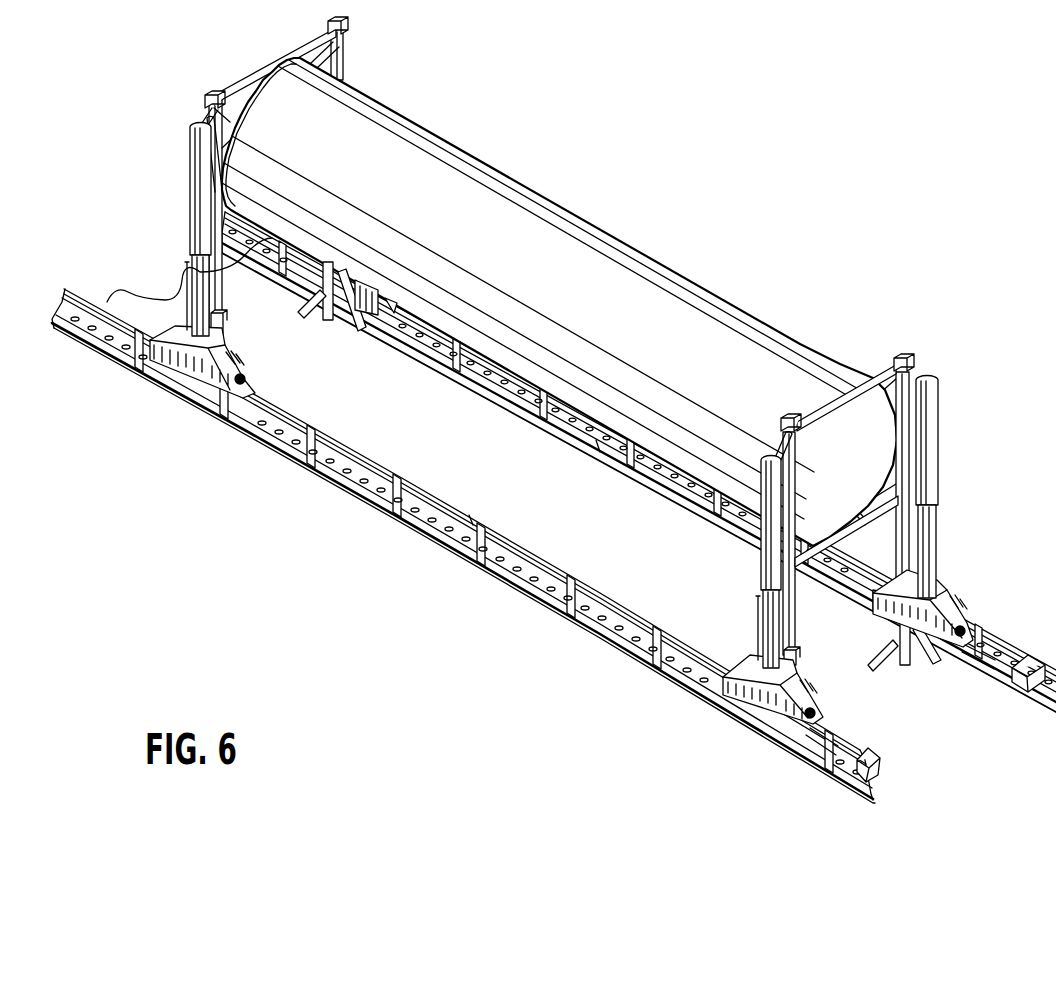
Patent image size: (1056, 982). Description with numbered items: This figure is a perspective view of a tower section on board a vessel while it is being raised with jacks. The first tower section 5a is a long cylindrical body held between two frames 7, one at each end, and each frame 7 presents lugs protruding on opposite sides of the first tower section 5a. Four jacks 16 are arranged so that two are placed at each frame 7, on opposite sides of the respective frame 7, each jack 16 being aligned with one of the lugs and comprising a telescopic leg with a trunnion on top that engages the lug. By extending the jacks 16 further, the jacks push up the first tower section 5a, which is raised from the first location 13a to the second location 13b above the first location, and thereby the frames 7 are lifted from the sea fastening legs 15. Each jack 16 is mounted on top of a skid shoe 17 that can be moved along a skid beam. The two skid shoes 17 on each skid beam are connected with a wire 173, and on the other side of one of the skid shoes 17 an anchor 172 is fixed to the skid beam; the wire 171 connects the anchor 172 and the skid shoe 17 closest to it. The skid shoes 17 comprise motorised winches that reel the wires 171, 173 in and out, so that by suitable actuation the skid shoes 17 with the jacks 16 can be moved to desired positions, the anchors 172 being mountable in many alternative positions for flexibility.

The first tower section 5a is at (476, 234).
The frame 7 is at (246, 80).
The first location 13a is at (463, 546).
The second location 13b is at (639, 462).
The sea fastening legs 15 is at (224, 334).
The jack 16 is at (187, 238).
The skid shoe 17 is at (241, 363).
The wire 171 is at (838, 736).
The anchor 172 is at (874, 758).
The wire 173 is at (473, 525).